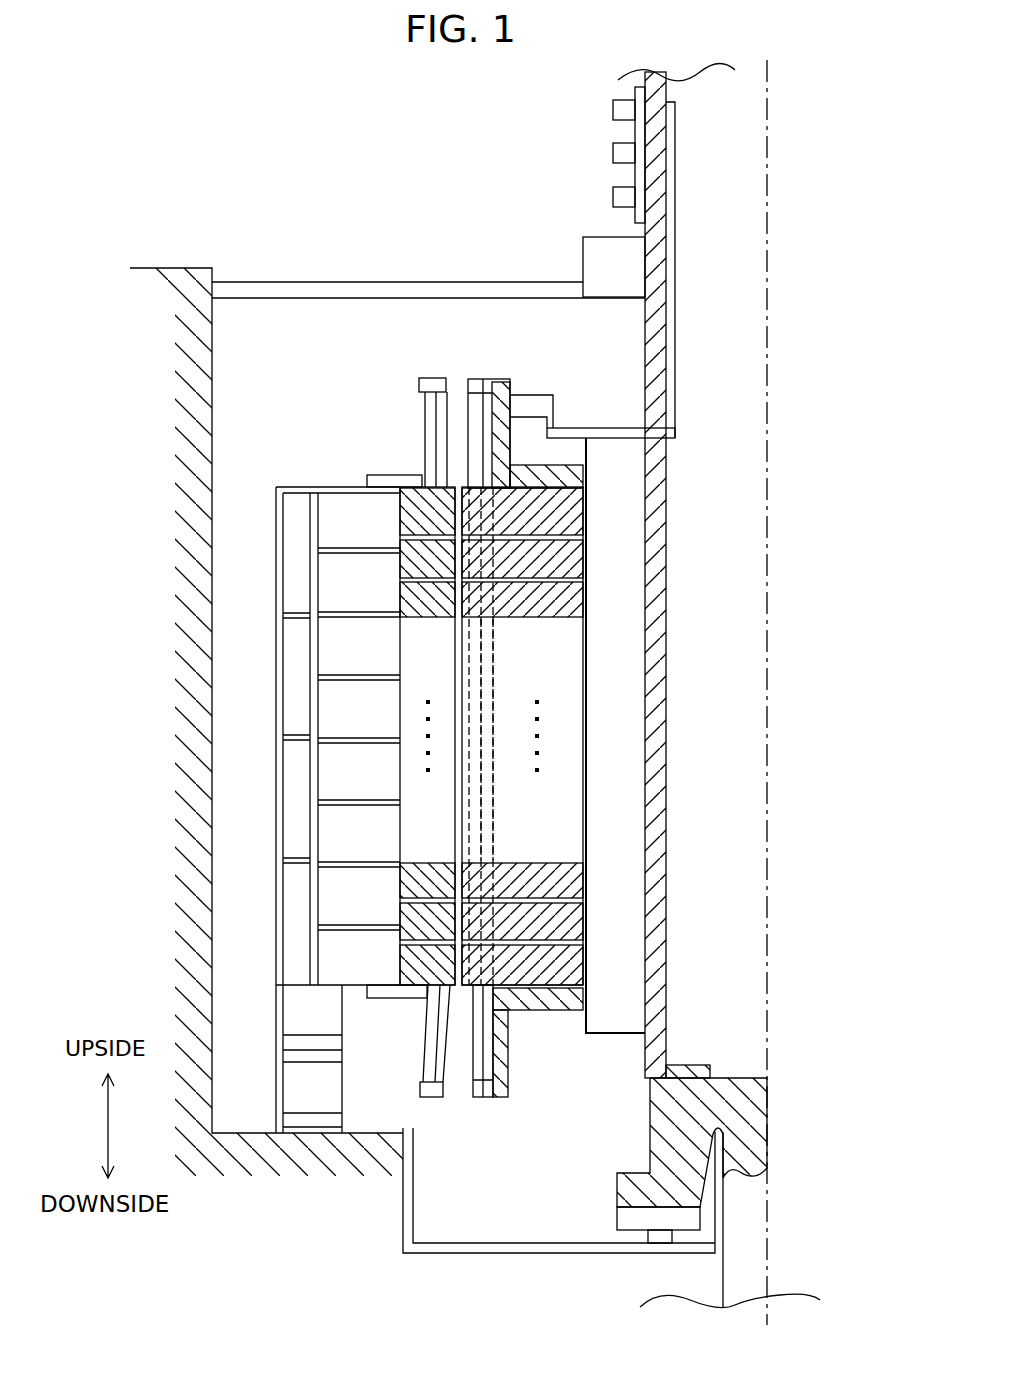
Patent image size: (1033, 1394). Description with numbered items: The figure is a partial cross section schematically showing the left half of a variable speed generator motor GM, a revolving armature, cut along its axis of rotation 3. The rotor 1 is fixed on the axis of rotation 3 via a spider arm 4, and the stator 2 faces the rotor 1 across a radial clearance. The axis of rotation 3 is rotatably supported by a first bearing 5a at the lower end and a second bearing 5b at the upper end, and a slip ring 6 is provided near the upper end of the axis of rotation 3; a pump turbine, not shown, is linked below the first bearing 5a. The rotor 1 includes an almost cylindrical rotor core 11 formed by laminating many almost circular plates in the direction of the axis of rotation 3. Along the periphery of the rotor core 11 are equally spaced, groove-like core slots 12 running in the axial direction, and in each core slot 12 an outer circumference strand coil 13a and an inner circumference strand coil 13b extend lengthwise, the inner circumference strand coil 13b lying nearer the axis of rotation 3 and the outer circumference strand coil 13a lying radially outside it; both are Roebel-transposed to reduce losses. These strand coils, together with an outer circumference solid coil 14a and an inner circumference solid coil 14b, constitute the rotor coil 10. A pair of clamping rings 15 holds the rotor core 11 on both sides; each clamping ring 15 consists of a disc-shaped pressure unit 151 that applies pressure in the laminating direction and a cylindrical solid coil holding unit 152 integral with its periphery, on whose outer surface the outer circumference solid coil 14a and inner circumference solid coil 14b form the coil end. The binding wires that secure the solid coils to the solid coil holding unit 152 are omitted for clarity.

The variable speed generator motor GM is at (396, 212).
The rotor 1 is at (578, 389).
The stator 2 is at (389, 421).
The axis of rotation 3 is at (667, 640).
The spider arm 4 is at (621, 731).
The first bearing 5a is at (650, 1130).
The second bearing 5b is at (583, 252).
The slip ring 6 is at (613, 110).
The rotor coil 10 is at (532, 644).
The rotor core 11 is at (563, 570).
The core slot 12 is at (462, 650).
The outer circumference strand coil 13a is at (477, 636).
The inner circumference strand coil 13b is at (487, 800).
The outer circumference solid coil 14a is at (475, 405).
The inner circumference solid coil 14b is at (487, 405).
The clamping ring 15 is at (633, 736).
The pressure unit 151 is at (558, 478).
The solid coil holding unit 152 is at (505, 421).